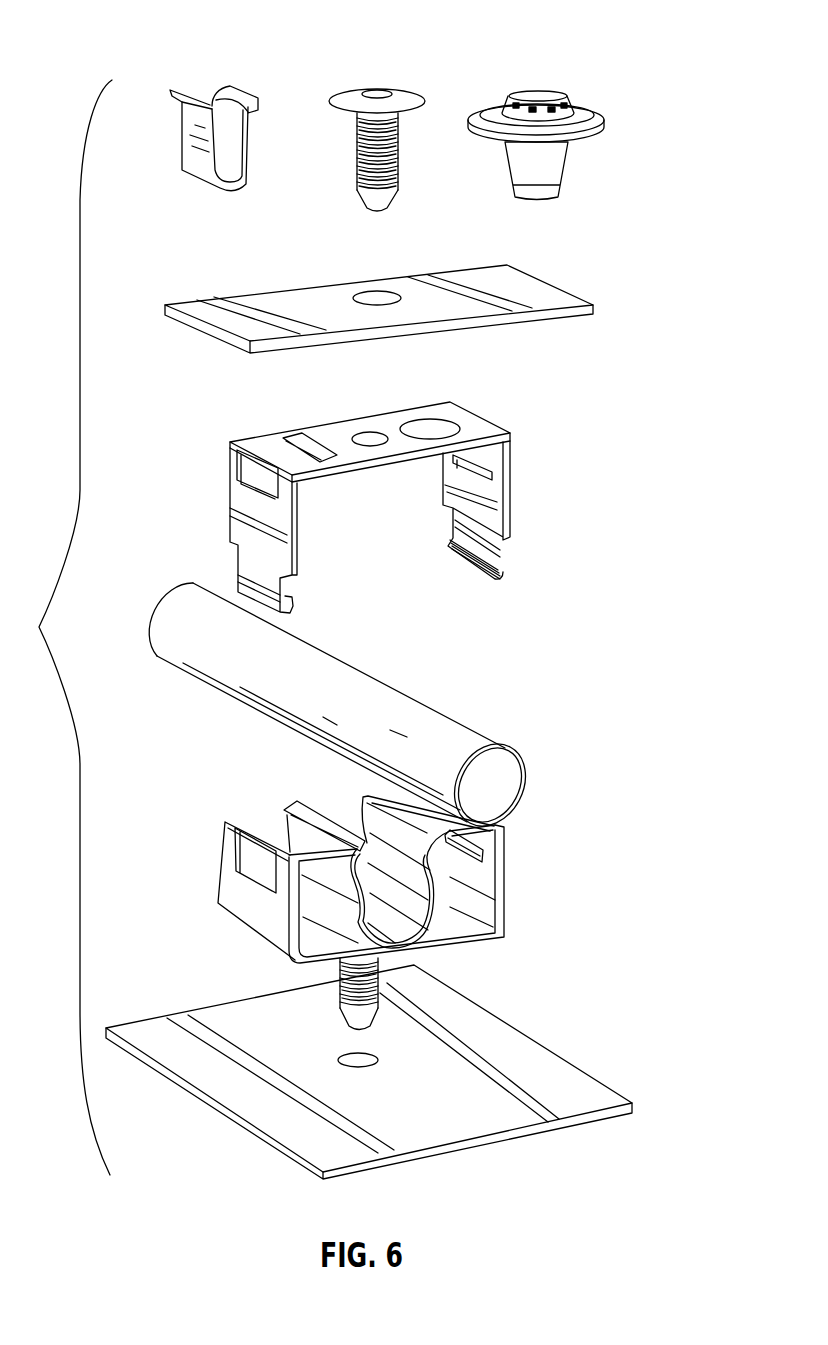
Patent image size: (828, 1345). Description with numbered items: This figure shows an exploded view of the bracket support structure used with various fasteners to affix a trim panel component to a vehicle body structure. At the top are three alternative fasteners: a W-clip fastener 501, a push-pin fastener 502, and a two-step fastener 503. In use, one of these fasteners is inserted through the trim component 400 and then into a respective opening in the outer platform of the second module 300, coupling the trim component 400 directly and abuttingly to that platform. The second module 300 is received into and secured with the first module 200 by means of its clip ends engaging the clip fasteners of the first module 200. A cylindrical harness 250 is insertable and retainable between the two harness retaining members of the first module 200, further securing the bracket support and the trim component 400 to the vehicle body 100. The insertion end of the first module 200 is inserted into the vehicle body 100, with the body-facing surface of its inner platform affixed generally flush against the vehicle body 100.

The vehicle body 100 is at (513, 1040).
The first module 200 is at (510, 865).
The cylindrical harness 250 is at (528, 772).
The second module 300 is at (513, 488).
The trim component 400 is at (593, 312).
The W-clip fastener 501 is at (245, 82).
The push-pin fastener 502 is at (378, 90).
The two-step fastener 503 is at (540, 96).